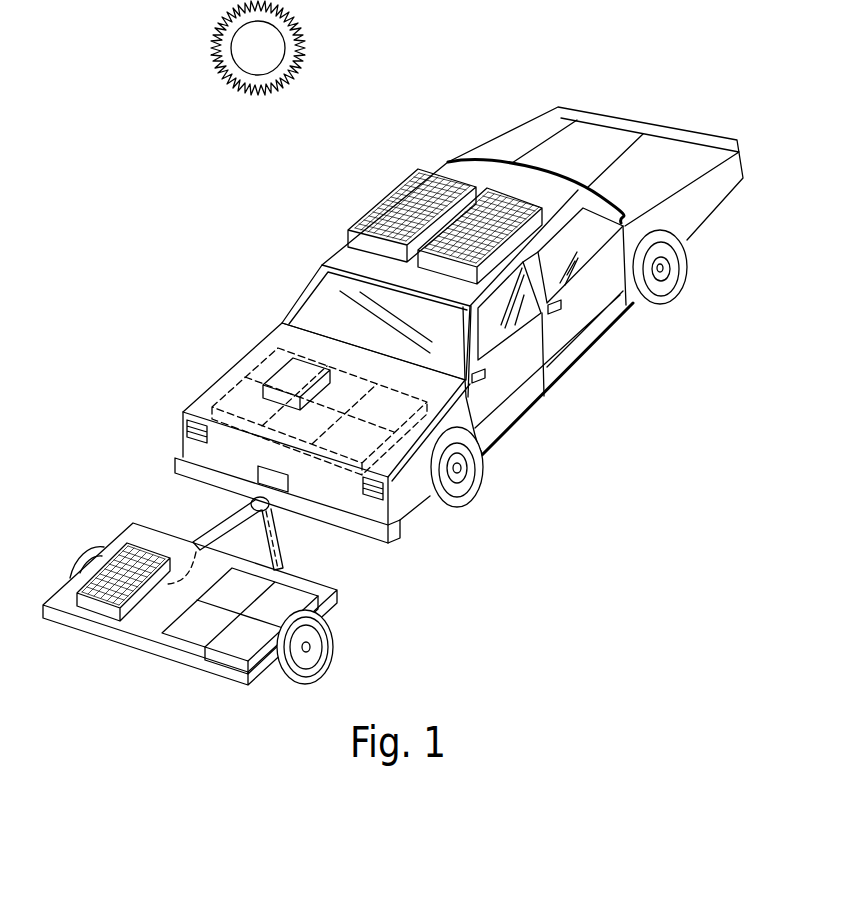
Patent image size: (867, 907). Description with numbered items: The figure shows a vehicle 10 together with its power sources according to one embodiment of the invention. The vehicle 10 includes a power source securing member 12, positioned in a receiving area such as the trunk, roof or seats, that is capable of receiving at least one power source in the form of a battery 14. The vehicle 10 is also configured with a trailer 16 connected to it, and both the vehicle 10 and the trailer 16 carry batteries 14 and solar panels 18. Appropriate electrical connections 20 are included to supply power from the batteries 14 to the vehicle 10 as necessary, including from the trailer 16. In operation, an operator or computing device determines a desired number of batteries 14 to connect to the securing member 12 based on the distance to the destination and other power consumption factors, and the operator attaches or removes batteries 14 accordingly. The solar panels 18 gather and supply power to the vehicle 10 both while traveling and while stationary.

The vehicle 10 is at (261, 342).
The power source securing member 12 is at (237, 393).
The battery 14 is at (290, 383).
The trailer 16 is at (127, 531).
The solar panel 18 is at (497, 195).
The electrical connections 20 is at (218, 530).